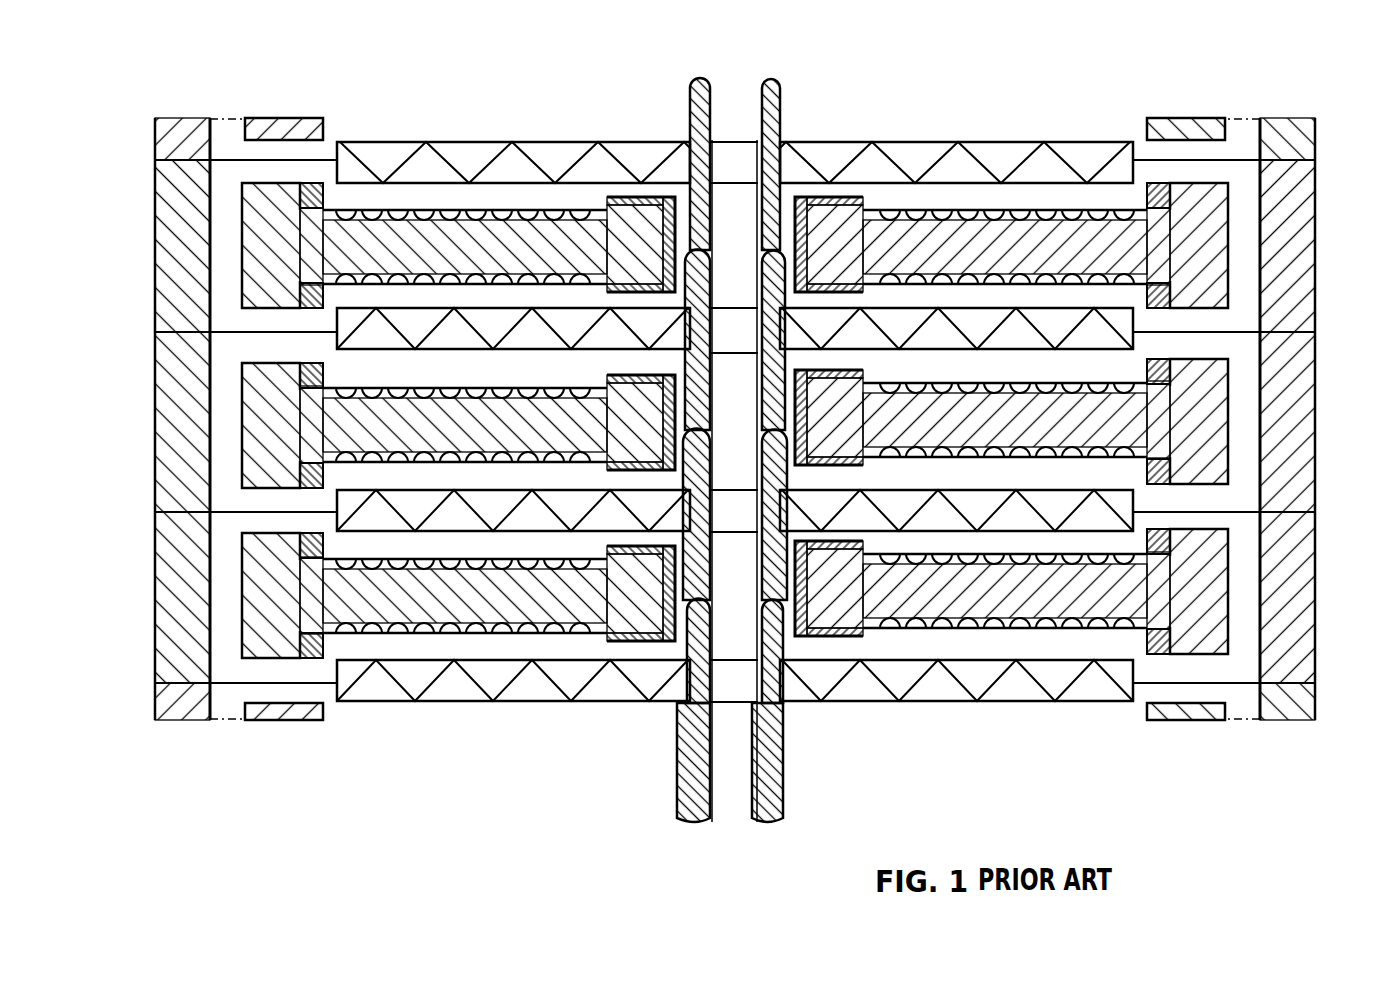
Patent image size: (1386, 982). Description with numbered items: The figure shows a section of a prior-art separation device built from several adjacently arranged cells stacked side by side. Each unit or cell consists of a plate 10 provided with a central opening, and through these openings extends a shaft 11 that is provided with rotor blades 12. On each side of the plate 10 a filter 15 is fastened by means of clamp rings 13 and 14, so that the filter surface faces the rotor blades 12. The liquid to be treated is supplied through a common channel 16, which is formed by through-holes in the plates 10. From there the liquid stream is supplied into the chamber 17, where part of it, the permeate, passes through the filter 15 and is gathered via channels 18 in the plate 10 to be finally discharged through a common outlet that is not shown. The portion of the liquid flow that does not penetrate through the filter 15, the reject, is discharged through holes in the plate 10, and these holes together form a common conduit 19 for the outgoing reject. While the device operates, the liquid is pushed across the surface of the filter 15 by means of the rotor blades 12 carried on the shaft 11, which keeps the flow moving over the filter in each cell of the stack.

The plate 10 is at (1215, 248).
The shaft 11 is at (748, 205).
The rotor blades 12 is at (500, 676).
The clamp ring 13 is at (640, 200).
The clamp ring 14 is at (313, 288).
The filter 15 is at (530, 283).
The common channel 16 is at (215, 428).
The chamber 17 is at (335, 478).
The channels 18 is at (565, 468).
The common conduit 19 is at (1245, 435).